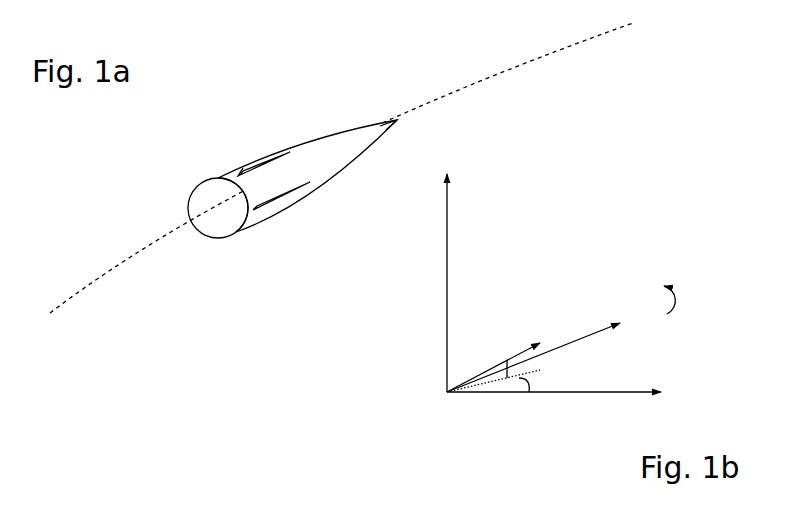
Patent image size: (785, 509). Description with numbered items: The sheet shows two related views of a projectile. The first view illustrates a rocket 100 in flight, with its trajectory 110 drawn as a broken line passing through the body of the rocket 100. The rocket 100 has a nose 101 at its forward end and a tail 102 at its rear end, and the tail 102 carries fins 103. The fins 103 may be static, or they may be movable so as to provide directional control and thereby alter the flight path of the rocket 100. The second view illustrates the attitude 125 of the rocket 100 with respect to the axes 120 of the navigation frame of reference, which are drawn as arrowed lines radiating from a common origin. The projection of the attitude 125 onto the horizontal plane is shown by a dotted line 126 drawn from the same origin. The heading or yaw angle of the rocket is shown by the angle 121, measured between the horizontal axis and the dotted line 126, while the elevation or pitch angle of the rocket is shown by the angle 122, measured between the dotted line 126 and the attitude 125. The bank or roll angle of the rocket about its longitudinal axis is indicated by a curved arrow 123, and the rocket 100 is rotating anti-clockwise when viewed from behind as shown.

In FIG. 1a, the rocket 100 is at (317, 143).
In FIG. 1a, the nose 101 is at (381, 120).
In FIG. 1a, the tail 102 is at (222, 237).
In FIG. 1a, the fins 103 is at (242, 168).
In FIG. 1a, the trajectory 110 is at (534, 60).
In FIG. 1b, the axes 120 is at (448, 195).
In FIG. 1b, the angle 121 is at (528, 392).
In FIG. 1b, the angle 122 is at (516, 352).
In FIG. 1b, the arrow 123 is at (685, 293).
In FIG. 1b, the attitude 125 is at (507, 362).
In FIG. 1b, the dotted line 126 is at (539, 372).